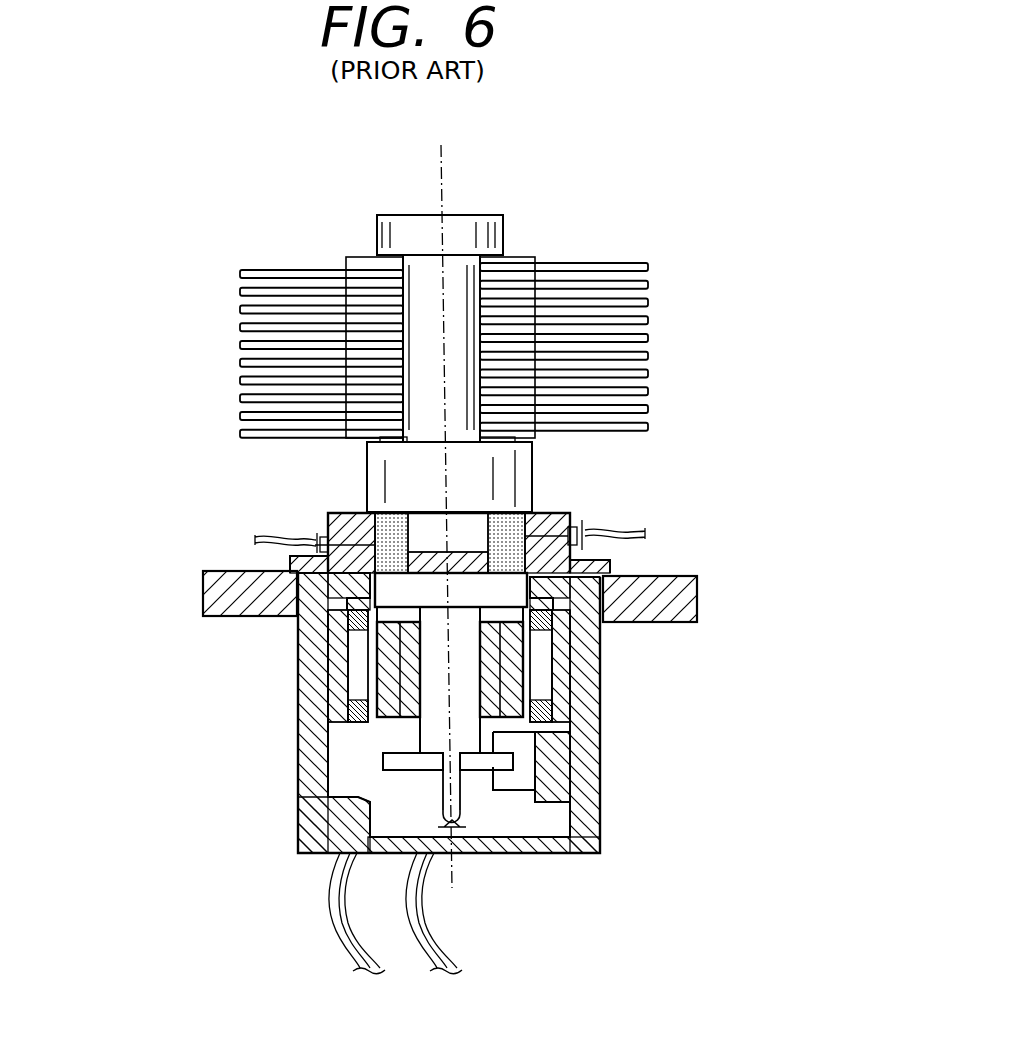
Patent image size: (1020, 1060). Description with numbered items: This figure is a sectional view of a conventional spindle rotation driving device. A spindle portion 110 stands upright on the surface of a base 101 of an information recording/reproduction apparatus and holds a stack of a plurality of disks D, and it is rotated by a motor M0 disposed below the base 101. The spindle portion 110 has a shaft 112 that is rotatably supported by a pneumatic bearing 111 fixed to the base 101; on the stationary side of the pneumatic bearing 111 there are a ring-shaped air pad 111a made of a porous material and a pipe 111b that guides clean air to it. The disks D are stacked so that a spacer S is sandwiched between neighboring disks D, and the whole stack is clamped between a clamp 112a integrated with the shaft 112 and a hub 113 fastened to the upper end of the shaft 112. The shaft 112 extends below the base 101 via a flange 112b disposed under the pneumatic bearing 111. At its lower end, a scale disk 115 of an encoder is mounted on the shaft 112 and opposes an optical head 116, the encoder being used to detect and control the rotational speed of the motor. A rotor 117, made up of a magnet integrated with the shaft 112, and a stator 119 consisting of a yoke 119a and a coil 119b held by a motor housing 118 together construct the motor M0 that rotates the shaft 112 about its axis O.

The base 101 is at (677, 600).
The spindle portion 110 is at (122, 277).
The pneumatic bearing 111 is at (385, 507).
The air pad 111a is at (390, 530).
The pipe 111b is at (262, 538).
The shaft 112 is at (386, 316).
The clamp 112a is at (512, 482).
The flange 112b is at (387, 588).
The hub 113 is at (493, 233).
The scale disk 115 is at (413, 760).
The optical head 116 is at (528, 778).
The rotor 117 is at (500, 683).
The motor housing 118 is at (583, 855).
The stator 119 is at (348, 675).
The yoke 119a is at (335, 665).
The coil 119b is at (355, 724).
The disk D is at (258, 270).
The spacer S is at (355, 257).
The rotation axis O is at (451, 516).
The motor M0 is at (610, 755).